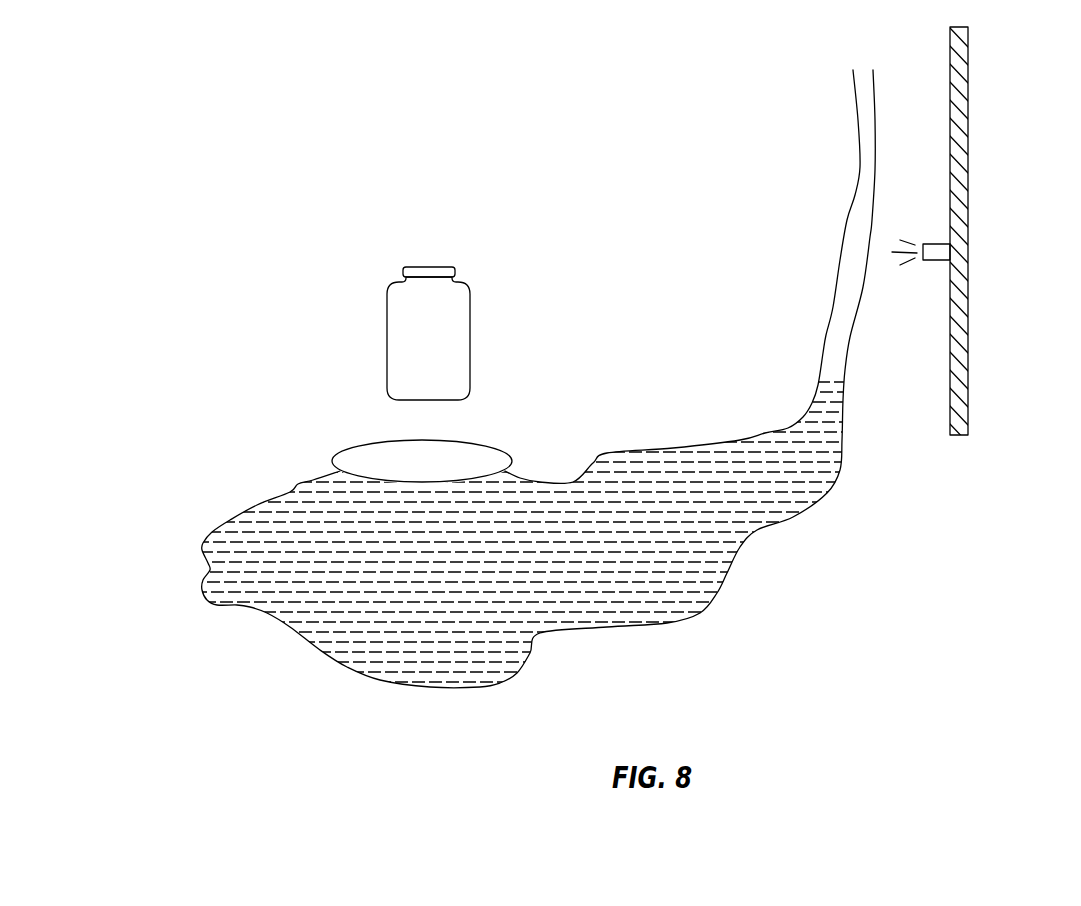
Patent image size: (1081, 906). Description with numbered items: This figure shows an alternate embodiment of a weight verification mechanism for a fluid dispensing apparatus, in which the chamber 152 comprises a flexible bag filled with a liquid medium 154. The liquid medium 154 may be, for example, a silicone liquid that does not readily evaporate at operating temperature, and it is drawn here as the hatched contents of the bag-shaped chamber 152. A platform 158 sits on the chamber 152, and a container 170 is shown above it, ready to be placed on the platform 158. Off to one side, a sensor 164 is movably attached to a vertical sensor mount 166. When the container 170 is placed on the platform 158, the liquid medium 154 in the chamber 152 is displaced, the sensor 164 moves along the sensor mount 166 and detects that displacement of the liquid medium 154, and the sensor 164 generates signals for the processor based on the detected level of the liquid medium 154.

The chamber 152 is at (257, 503).
The liquid medium 154 is at (327, 607).
The platform 158 is at (458, 462).
The sensor 164 is at (933, 248).
The sensor mount 166 is at (962, 302).
The container 170 is at (462, 323).